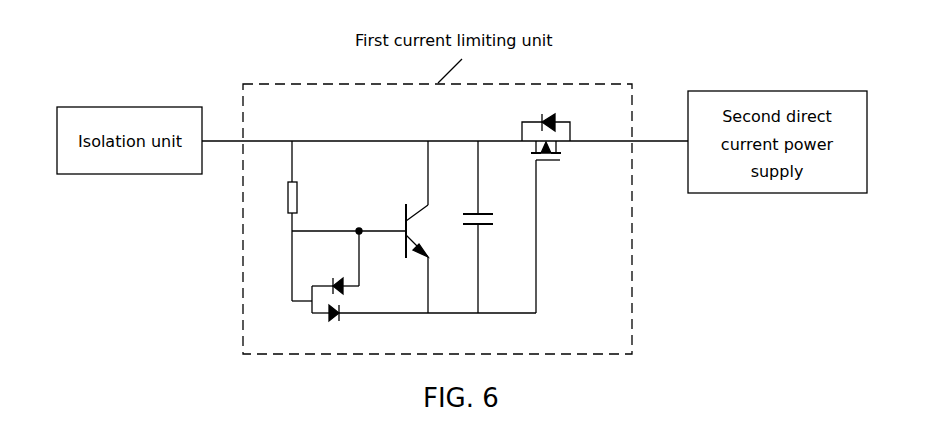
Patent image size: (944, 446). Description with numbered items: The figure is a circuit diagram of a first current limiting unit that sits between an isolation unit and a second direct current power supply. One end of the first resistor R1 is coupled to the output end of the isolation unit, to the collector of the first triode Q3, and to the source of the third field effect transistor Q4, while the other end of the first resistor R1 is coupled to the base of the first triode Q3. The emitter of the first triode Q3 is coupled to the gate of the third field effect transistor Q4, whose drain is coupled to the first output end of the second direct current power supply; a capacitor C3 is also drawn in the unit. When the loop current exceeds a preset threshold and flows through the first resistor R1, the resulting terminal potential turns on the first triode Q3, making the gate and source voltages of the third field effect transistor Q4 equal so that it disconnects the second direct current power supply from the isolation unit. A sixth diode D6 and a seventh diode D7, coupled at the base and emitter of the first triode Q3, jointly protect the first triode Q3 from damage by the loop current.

The first resistor R1 is at (307, 177).
The sixth diode D6 is at (335, 272).
The seventh diode D7 is at (335, 327).
The first triode Q3 is at (423, 227).
The capacitor C3 is at (493, 227).
The third field effect transistor Q4 is at (551, 213).